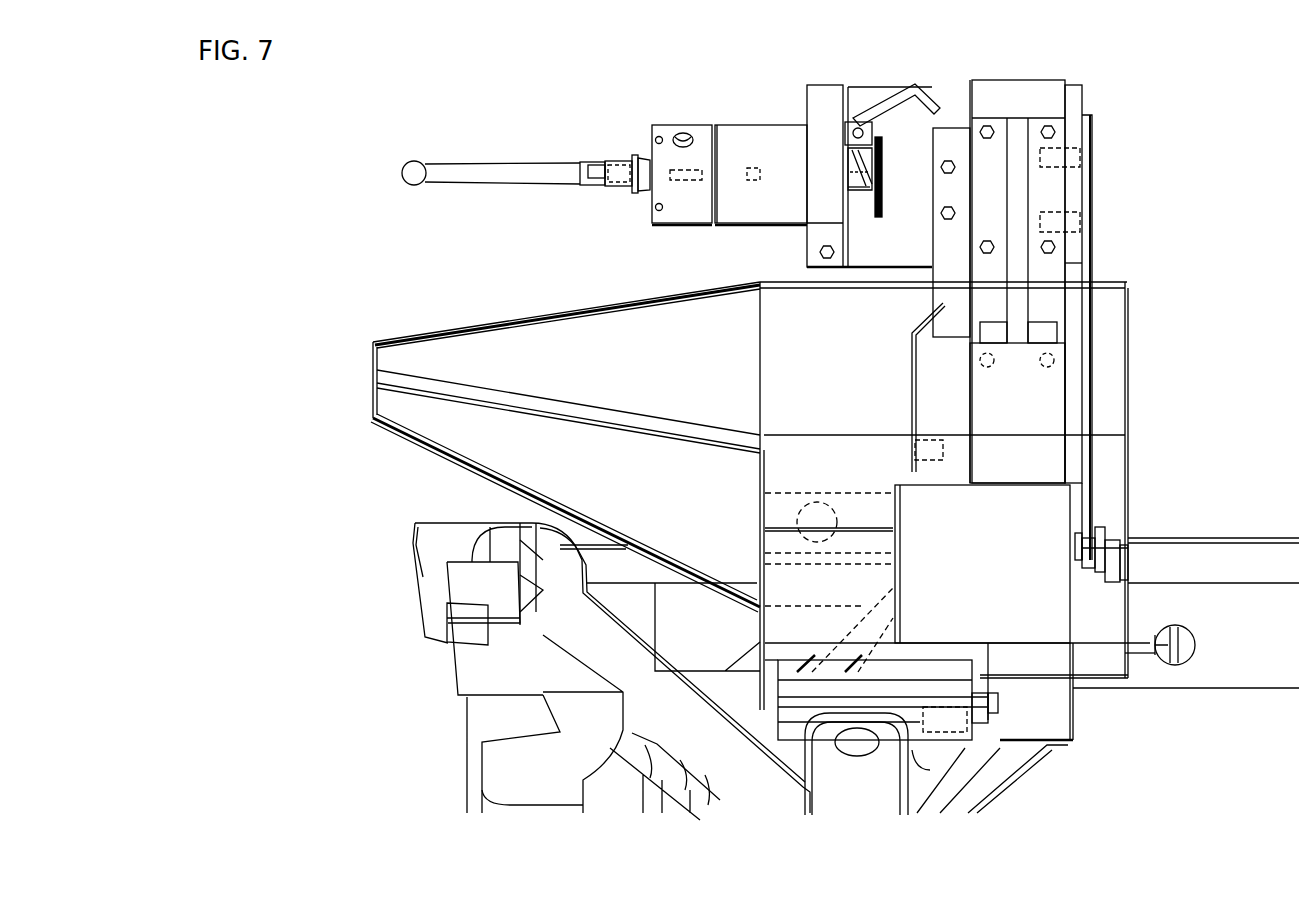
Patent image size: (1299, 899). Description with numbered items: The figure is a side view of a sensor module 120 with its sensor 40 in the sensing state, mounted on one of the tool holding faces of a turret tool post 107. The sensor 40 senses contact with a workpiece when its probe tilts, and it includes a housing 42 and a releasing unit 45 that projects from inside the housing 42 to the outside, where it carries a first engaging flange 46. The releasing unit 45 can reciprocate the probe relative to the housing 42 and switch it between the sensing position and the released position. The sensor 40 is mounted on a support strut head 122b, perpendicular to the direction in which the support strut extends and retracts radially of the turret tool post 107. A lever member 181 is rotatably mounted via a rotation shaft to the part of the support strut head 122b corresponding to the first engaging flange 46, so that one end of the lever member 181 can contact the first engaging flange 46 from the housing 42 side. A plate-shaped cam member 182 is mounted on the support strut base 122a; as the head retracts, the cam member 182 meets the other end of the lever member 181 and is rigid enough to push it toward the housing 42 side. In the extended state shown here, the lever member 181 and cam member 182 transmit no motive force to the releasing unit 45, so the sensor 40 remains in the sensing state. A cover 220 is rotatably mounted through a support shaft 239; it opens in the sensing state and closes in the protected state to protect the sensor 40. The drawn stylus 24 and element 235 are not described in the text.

The sensor 40 is at (426, 108).
The stylus 24 is at (470, 166).
The housing 42 is at (735, 127).
The sensor module 120 is at (1076, 62).
The support strut head 122b is at (825, 86).
The lever member 181 is at (917, 90).
The plate 235 is at (1092, 160).
The releasing unit 45 is at (883, 178).
The first engaging flange 46 is at (873, 207).
The cover 220 is at (478, 324).
The cam member 182 is at (905, 390).
The support strut base 122a is at (1035, 520).
The turret tool post 107 is at (1180, 714).
The support shaft 239 is at (1002, 702).